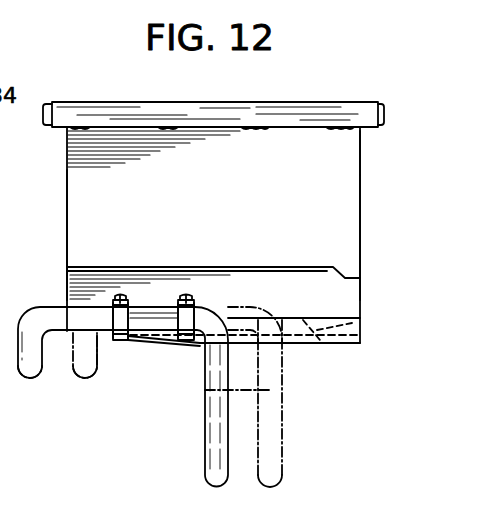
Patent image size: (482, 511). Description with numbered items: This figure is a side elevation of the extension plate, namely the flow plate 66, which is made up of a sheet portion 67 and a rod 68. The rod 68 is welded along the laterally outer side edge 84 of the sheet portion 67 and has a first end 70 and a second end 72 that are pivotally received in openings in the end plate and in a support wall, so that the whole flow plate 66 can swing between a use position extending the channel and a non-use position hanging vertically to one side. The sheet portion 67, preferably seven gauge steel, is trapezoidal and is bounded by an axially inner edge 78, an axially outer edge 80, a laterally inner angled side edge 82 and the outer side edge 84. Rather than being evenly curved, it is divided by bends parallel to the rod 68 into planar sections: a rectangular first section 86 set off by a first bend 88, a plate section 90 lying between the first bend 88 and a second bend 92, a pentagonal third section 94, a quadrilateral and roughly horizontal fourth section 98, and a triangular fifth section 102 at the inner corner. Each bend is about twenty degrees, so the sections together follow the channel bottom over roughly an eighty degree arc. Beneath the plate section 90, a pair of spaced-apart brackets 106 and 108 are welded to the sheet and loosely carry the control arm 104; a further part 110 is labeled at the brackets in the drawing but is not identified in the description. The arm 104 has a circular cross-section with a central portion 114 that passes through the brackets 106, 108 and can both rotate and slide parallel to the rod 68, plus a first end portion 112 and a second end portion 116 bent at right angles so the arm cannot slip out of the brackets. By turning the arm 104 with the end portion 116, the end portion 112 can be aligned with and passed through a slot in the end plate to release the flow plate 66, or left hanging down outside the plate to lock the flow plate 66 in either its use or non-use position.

The flow plate 66 is at (368, 197).
The sheet portion 67 is at (67, 167).
The rod 68 is at (117, 102).
The first end 70 is at (50, 103).
The second end 72 is at (375, 104).
The axially inner edge 78 is at (360, 232).
The axially outer edge 80 is at (67, 208).
The laterally inner angled side edge 82 is at (138, 344).
The laterally outer side edge 84 is at (311, 126).
The first section 86 is at (338, 170).
The first bend 88 is at (351, 278).
The plate section 90 is at (338, 295).
The second bend 92 is at (320, 340).
The third section 94 is at (280, 328).
The fourth section 98 is at (350, 343).
The fifth section 102 is at (360, 330).
The control arm 104 is at (205, 432).
The bracket 106 is at (120, 297).
The bracket 108 is at (187, 306).
The clamp bolt 110 is at (118, 307).
The first end portion 112 is at (85, 362).
The central portion 114 is at (158, 324).
The second end portion 116 is at (210, 386).